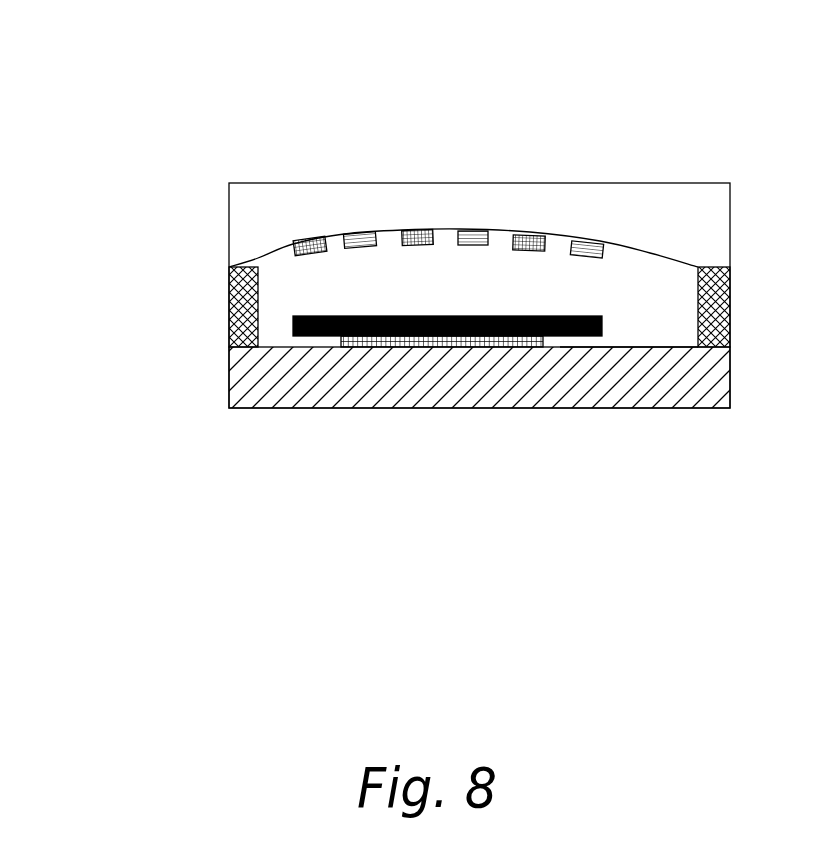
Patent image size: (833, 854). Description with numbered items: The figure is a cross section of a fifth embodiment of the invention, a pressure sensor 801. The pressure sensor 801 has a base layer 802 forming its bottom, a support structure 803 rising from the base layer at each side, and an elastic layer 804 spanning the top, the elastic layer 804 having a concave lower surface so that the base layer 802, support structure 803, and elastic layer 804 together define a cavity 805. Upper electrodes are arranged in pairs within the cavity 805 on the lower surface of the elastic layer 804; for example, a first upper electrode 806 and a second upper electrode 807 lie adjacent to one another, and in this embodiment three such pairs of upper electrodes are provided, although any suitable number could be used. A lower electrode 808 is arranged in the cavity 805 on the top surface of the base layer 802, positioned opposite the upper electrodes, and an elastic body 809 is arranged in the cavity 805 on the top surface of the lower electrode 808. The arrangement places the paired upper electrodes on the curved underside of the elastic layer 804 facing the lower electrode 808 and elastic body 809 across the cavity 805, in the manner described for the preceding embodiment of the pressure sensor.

The pressure sensor 801 is at (170, 138).
The base layer 802 is at (512, 400).
The support structure 803 is at (720, 308).
The elastic layer 804 is at (576, 193).
The cavity 805 is at (646, 340).
The first upper electrode 806 is at (418, 231).
The second upper electrode 807 is at (477, 231).
The lower electrode 808 is at (433, 343).
The elastic body 809 is at (315, 337).